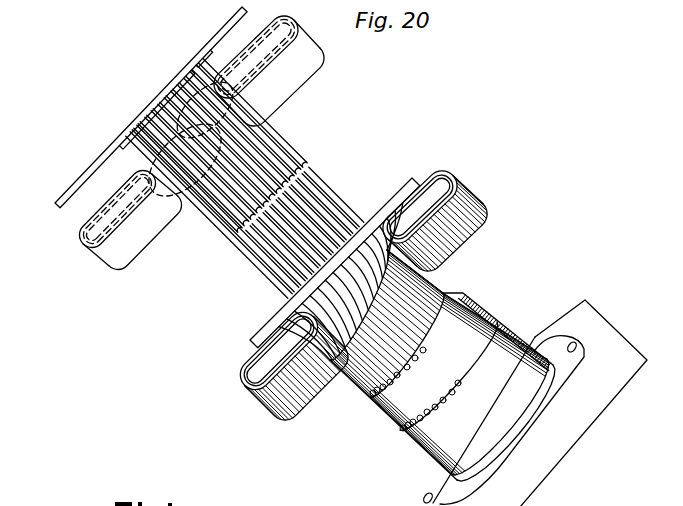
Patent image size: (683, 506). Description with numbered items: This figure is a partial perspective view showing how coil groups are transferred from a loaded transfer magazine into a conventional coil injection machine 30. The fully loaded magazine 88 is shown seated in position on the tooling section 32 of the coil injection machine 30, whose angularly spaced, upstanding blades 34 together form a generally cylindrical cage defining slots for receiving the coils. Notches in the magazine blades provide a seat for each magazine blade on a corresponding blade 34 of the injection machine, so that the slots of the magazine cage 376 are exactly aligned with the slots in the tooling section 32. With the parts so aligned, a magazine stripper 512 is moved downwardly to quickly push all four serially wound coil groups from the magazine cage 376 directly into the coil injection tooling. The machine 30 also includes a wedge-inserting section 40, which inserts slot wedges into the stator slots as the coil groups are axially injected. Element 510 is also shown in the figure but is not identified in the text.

The magazine 88 is at (291, 133).
The magazine cage 376 is at (293, 153).
The blades 34 is at (327, 188).
The tooling section 32 is at (252, 276).
The magazine stripper 512 is at (410, 183).
The core 510 is at (480, 188).
The coil injection machine 30 is at (524, 280).
The wedge-inserting section 40 is at (497, 310).